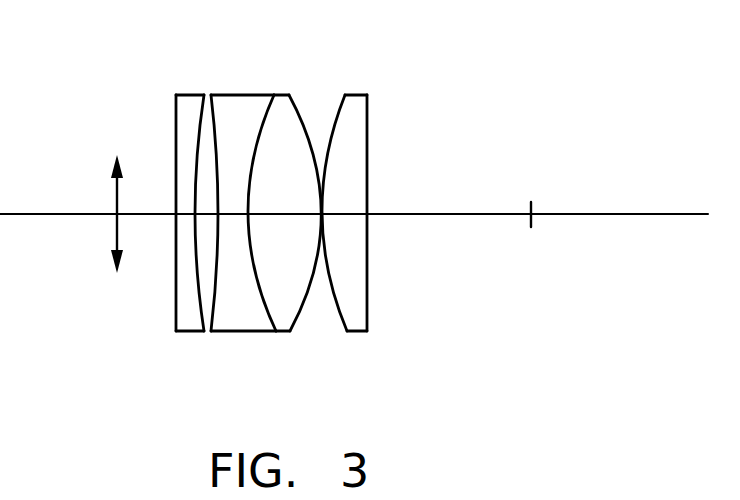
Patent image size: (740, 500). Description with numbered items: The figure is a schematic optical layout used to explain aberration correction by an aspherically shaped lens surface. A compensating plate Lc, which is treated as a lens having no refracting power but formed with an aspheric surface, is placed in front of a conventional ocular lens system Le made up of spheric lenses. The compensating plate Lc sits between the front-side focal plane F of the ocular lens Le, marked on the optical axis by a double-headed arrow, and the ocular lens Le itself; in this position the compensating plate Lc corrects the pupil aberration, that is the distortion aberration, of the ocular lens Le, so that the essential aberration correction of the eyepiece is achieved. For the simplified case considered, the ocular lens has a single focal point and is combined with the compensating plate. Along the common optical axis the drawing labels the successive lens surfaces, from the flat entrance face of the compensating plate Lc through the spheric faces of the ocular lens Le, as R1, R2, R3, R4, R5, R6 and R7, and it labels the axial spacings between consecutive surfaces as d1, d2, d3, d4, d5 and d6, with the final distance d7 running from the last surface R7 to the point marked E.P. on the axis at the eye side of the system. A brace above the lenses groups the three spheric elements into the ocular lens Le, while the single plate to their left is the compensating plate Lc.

The compensating plate Lc is at (156, 207).
The ocular lens system Le is at (331, 207).
The front-side focal plane F is at (117, 226).
The eye point E.P. is at (535, 234).
The radius of curvature of first lens surface R1 is at (174, 306).
The radius of curvature of second lens surface R2 is at (199, 333).
The radius of curvature of third lens surface R3 is at (216, 300).
The radius of curvature of fourth lens surface R4 is at (266, 313).
The radius of curvature of fifth lens surface R5 is at (302, 311).
The radius of curvature of sixth lens surface R6 is at (338, 310).
The radius of curvature of seventh lens surface R7 is at (368, 303).
The axial thickness of correction lens d1 is at (187, 214).
The axial air gap between Lc and Le d2 is at (203, 213).
The axial thickness of first eyepiece element d3 is at (232, 214).
The axial thickness of second eyepiece element d4 is at (283, 214).
The axial air gap between second and third eyepiece elements d5 is at (319, 213).
The axial thickness of third eyepiece element d6 is at (348, 213).
The axial distance from last surface to eye point d7 is at (443, 214).